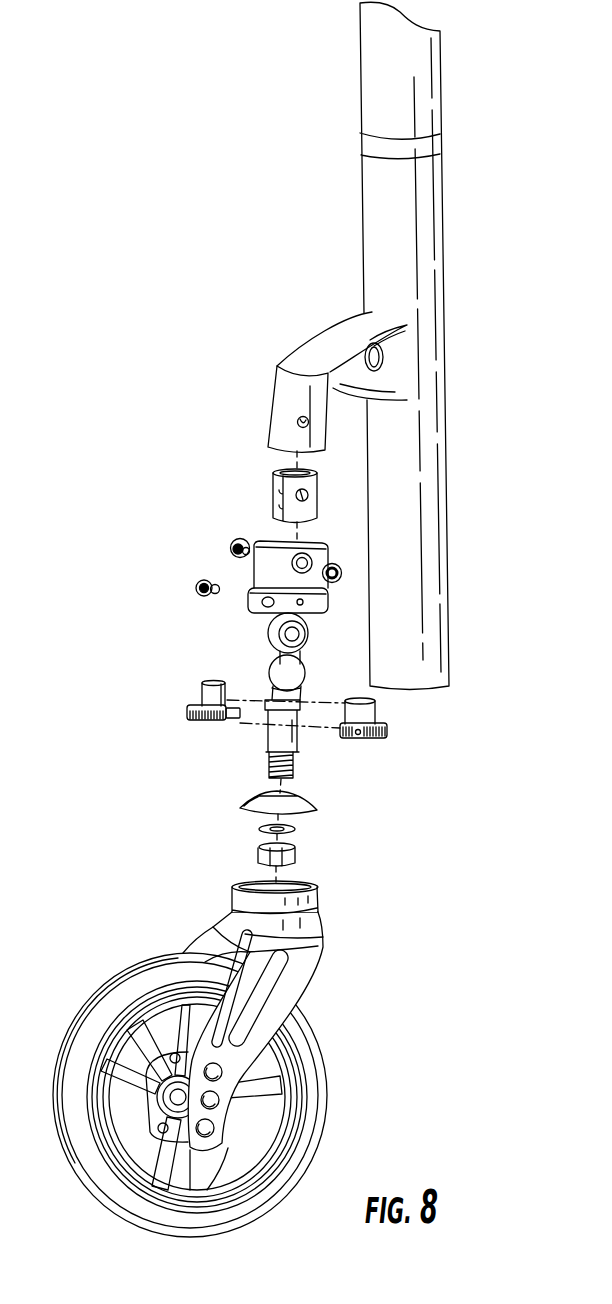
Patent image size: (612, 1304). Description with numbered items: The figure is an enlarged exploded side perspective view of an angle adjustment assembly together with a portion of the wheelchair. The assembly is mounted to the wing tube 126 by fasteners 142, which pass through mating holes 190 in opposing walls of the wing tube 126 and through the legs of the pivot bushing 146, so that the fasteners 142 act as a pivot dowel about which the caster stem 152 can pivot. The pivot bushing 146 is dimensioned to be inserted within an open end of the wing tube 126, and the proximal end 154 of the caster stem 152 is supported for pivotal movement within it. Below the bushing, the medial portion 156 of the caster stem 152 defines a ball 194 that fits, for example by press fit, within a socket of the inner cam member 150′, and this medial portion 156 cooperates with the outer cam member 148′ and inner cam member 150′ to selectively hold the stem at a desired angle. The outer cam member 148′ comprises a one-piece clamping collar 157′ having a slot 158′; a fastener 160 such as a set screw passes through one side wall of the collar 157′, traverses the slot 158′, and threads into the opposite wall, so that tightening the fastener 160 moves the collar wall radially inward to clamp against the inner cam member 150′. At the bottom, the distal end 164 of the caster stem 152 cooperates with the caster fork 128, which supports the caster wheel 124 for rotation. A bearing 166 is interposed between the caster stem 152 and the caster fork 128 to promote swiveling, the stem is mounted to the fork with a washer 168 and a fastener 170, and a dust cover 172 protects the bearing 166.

The caster wheel 124 is at (98, 1010).
The wing tube 126 is at (352, 333).
The caster fork 128 is at (293, 968).
The fasteners 142 is at (233, 542).
The pivot bushing 146 is at (252, 477).
The outer cam member 148′ is at (336, 504).
The inner cam member 150′ is at (403, 725).
The caster stem 152 is at (236, 756).
The proximal end 154 is at (232, 632).
The medial portion 156 is at (343, 678).
The clamping collar 157′ is at (328, 545).
The slot 158′ is at (255, 568).
The fastener 160 is at (196, 588).
The distal end 164 is at (312, 777).
The bearing 166 is at (297, 884).
The washer 168 is at (295, 831).
The fastener 170 is at (258, 855).
The dust cover 172 is at (257, 802).
The holes 190 is at (298, 420).
The ball 194 is at (268, 674).